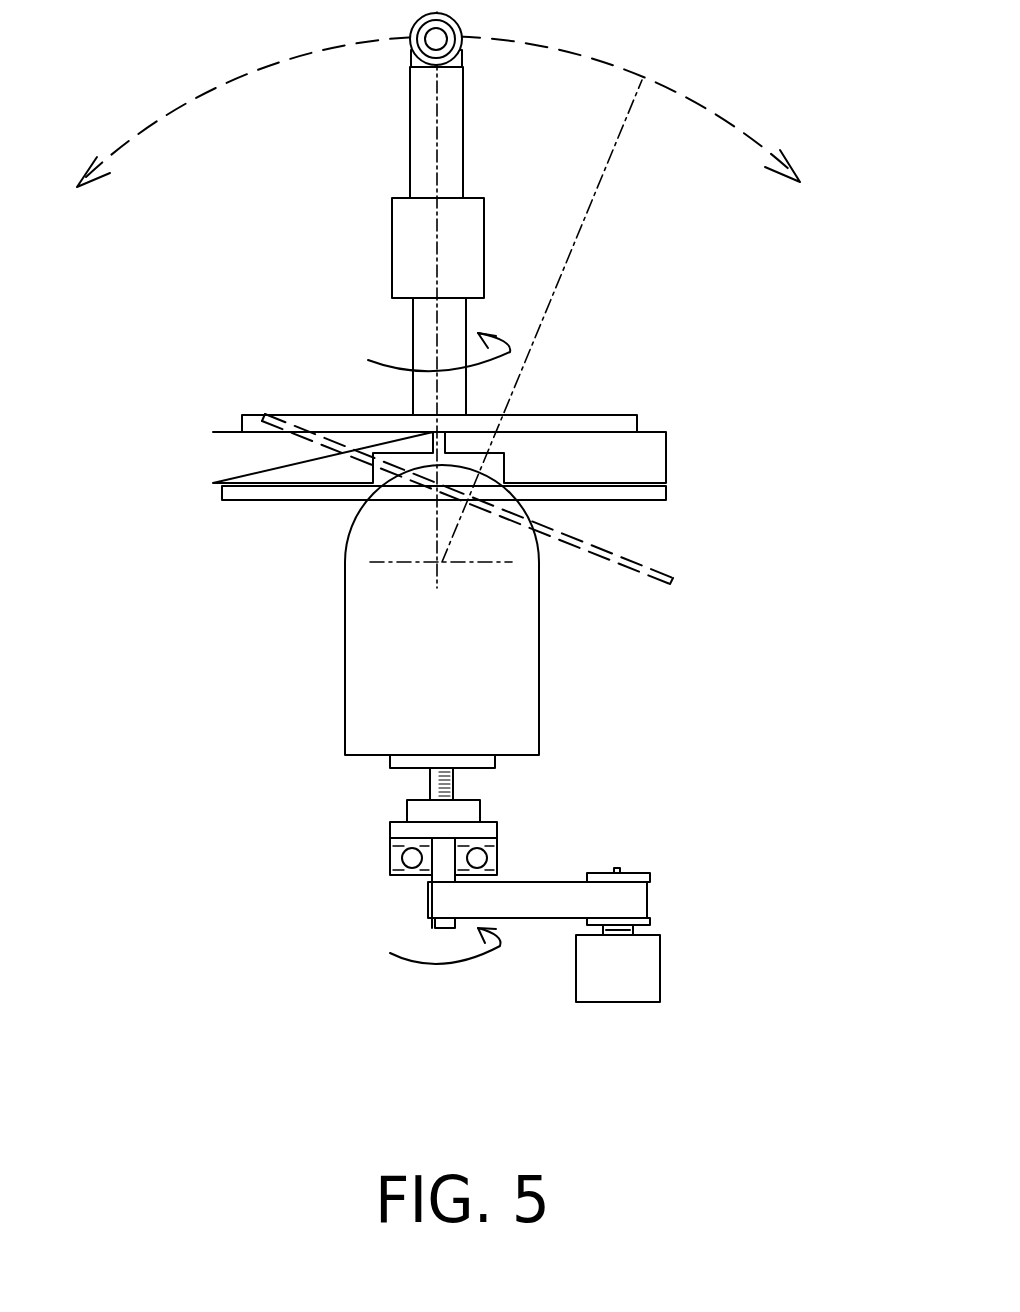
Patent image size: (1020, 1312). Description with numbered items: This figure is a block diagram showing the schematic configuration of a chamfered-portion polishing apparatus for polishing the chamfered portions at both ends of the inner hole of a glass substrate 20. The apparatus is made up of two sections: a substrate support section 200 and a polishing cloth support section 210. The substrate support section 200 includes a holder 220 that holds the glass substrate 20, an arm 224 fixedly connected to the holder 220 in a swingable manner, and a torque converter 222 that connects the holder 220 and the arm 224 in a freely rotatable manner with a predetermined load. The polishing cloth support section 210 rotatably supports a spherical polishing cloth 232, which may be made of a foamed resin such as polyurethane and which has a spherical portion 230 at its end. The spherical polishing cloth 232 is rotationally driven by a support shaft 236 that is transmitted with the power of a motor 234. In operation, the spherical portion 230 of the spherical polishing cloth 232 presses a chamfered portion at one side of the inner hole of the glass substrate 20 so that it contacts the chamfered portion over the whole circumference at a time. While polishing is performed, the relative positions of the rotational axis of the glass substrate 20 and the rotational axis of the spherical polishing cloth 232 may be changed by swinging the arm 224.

The substrate support section 200 is at (650, 324).
The polishing cloth support section 210 is at (517, 733).
The holder 220 is at (213, 460).
The torque converter 222 is at (396, 261).
The arm 224 is at (414, 145).
The spherical portion 230 is at (355, 696).
The spherical polishing cloth 232 is at (360, 680).
The motor 234 is at (652, 973).
The support shaft 236 is at (440, 872).
The glass substrate 20 is at (647, 497).